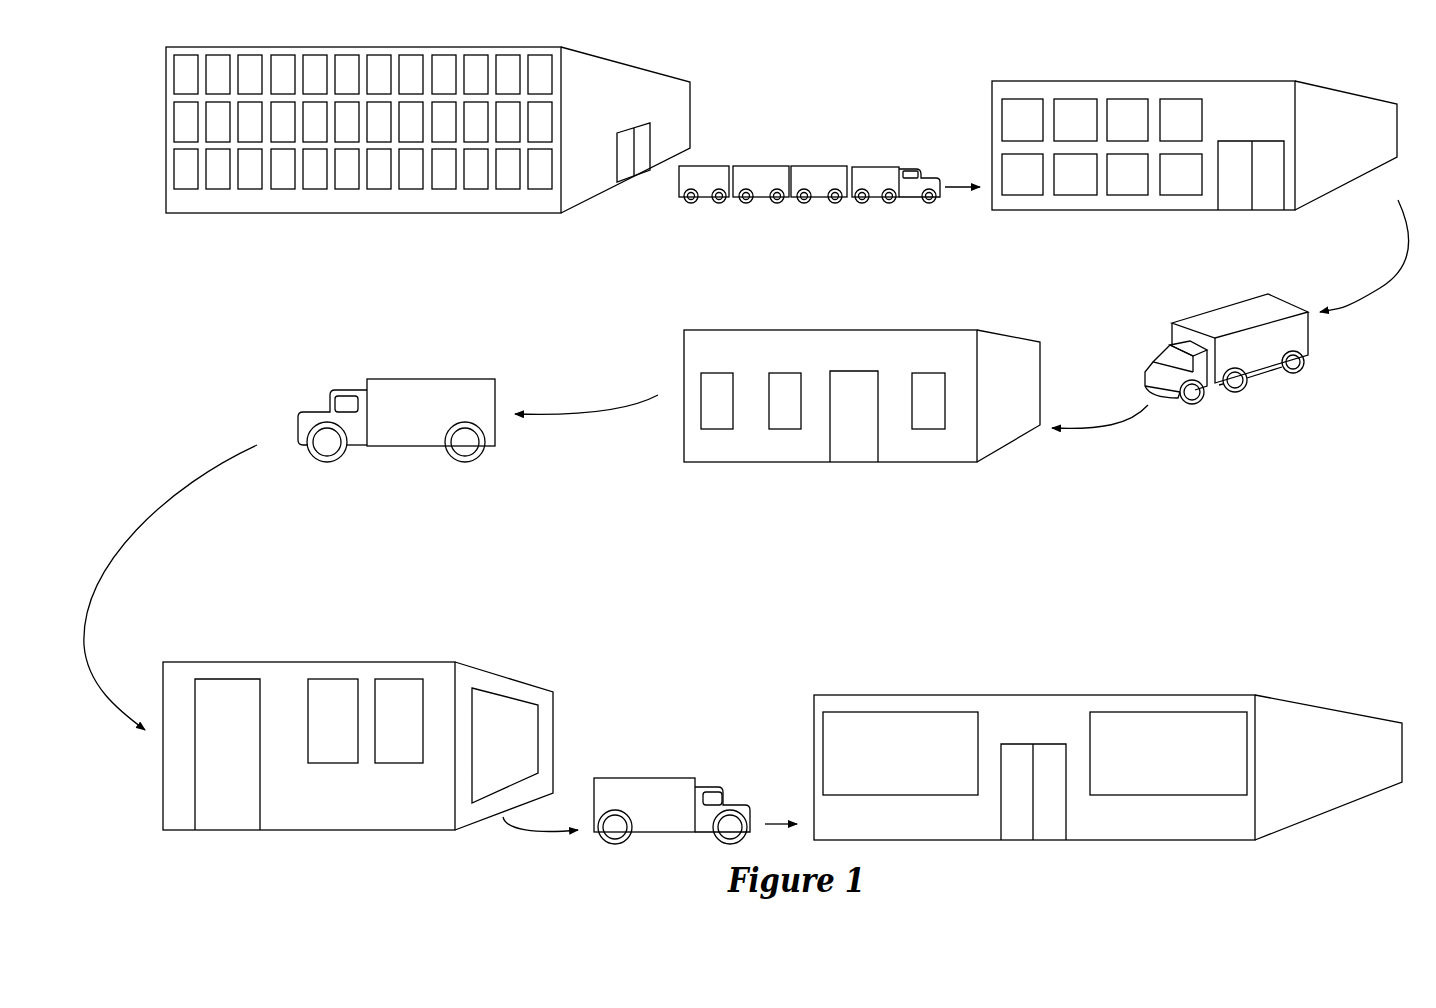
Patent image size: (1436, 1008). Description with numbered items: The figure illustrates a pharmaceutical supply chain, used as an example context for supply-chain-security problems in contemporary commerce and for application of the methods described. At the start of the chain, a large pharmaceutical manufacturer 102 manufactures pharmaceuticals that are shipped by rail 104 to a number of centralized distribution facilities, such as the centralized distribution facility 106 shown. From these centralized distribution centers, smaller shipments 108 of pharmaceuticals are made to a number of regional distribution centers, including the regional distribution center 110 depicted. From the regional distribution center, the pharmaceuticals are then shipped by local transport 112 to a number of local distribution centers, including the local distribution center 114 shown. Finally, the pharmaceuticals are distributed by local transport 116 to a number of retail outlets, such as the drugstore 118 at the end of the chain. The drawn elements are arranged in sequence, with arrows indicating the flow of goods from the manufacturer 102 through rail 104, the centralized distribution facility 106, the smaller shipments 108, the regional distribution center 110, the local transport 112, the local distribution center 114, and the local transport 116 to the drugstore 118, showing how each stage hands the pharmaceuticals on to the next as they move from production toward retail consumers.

The pharmaceutical manufacturer 102 is at (326, 214).
The rail 104 is at (815, 148).
The centralized distribution facility 106 is at (1156, 70).
The smaller shipments 108 is at (1253, 393).
The regional distribution center 110 is at (830, 478).
The local transport 112 is at (390, 455).
The local distribution center 114 is at (337, 653).
The local transport 116 is at (652, 772).
The drugstore 118 is at (1053, 680).